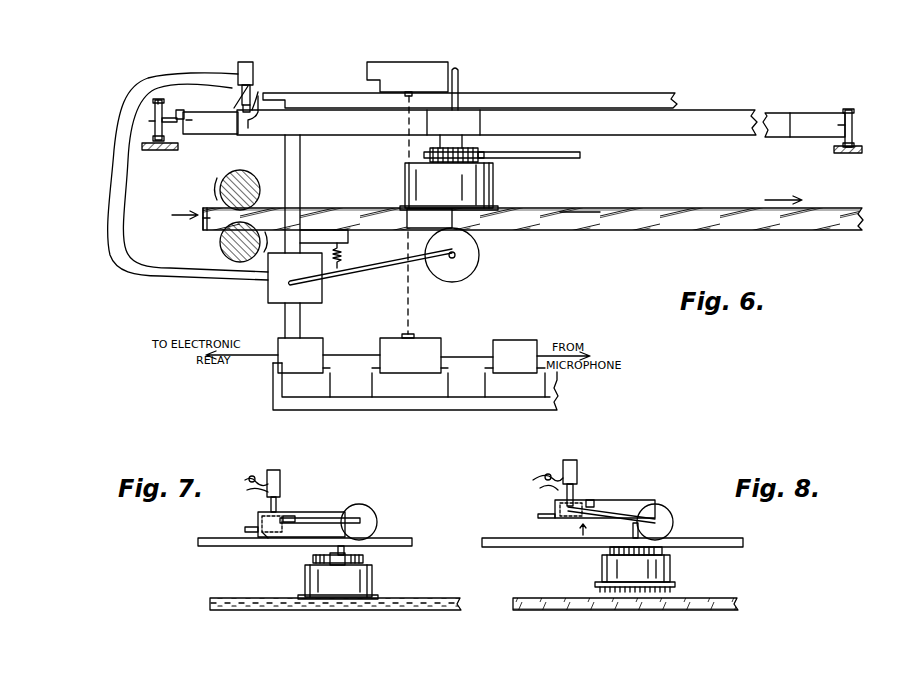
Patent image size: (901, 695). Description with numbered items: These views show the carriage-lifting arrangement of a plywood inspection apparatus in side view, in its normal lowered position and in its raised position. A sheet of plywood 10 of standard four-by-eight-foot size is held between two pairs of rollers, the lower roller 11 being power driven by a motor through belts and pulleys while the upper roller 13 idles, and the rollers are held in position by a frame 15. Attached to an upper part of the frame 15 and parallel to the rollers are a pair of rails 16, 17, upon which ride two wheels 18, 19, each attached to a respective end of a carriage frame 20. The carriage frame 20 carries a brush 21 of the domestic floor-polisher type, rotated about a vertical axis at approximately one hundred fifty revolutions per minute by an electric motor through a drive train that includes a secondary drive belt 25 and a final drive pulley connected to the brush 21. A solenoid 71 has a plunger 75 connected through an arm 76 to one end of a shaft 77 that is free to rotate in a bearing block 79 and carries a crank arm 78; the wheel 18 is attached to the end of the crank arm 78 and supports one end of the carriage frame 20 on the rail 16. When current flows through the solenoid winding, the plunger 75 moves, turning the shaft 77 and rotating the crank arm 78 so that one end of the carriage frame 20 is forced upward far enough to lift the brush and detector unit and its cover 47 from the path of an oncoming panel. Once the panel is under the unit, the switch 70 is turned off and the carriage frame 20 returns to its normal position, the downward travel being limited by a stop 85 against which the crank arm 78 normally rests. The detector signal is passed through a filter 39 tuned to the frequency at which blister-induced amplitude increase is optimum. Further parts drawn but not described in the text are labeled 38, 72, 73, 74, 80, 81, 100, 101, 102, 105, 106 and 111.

In FIG. 6, the sheet of plywood 10 is at (826, 209).
In FIG. 7, the sheet of plywood 10 is at (432, 598).
In FIG. 8, the sheet of plywood 10 is at (720, 598).
In FIG. 6, the lower roller 11 is at (224, 252).
In FIG. 6, the upper roller 13 is at (251, 176).
In FIG. 6, the frame 15 is at (302, 92).
In FIG. 6, the rail 16 is at (150, 151).
In FIG. 7, the rail 16 is at (396, 538).
In FIG. 8, the rail 16 is at (713, 538).
In FIG. 6, the rail 17 is at (842, 154).
In FIG. 6, the wheel 18 is at (160, 100).
In FIG. 7, the wheel 18 is at (368, 511).
In FIG. 8, the wheel 18 is at (668, 516).
In FIG. 6, the wheel 19 is at (851, 109).
In FIG. 6, the carriage frame 20 is at (506, 112).
In FIG. 6, the brush 21 is at (495, 188).
In FIG. 7, the brush 21 is at (304, 578).
In FIG. 8, the brush 21 is at (600, 568).
In FIG. 6, the secondary drive belt 25 is at (562, 166).
In FIG. 6, the amplifier unit 38 is at (527, 370).
In FIG. 6, the filter 39 is at (303, 368).
In FIG. 6, the cover 47 is at (430, 155).
In FIG. 7, the cover 47 is at (372, 575).
In FIG. 8, the cover 47 is at (670, 568).
In FIG. 6, the switch 70 is at (312, 303).
In FIG. 6, the solenoid 71 is at (250, 64).
In FIG. 7, the solenoid 71 is at (281, 486).
In FIG. 8, the solenoid 71 is at (578, 474).
In FIG. 6, the lever arm 72 is at (355, 278).
In FIG. 6, the pivot 73 is at (437, 276).
In FIG. 6, the wheel 74 is at (481, 258).
In FIG. 6, the plunger 75 is at (236, 92).
In FIG. 6, the arm 76 is at (258, 96).
In FIG. 7, the arm 76 is at (272, 538).
In FIG. 8, the arm 76 is at (568, 531).
In FIG. 6, the shaft 77 is at (172, 117).
In FIG. 6, the crank arm 78 is at (164, 132).
In FIG. 7, the crank arm 78 is at (328, 515).
In FIG. 8, the crank arm 78 is at (632, 512).
In FIG. 6, the bearing block 79 is at (215, 130).
In FIG. 7, the bearing block 79 is at (300, 512).
In FIG. 8, the bearing block 79 is at (566, 508).
In FIG. 6, the motor housing 80 is at (436, 64).
In FIG. 6, the electronic unit 81 is at (419, 366).
In FIG. 6, the stop 85 is at (197, 118).
In FIG. 7, the stop 85 is at (272, 514).
In FIG. 8, the stop 85 is at (592, 500).
In FIG. 6, the bracket 100 is at (424, 220).
In FIG. 6, the web edge 101 is at (218, 222).
In FIG. 6, the web surface 102 is at (592, 210).
In FIG. 6, the mounting block 105 is at (404, 204).
In FIG. 6, the spring 106 is at (346, 258).
In FIG. 6, the axis line 111 is at (412, 335).